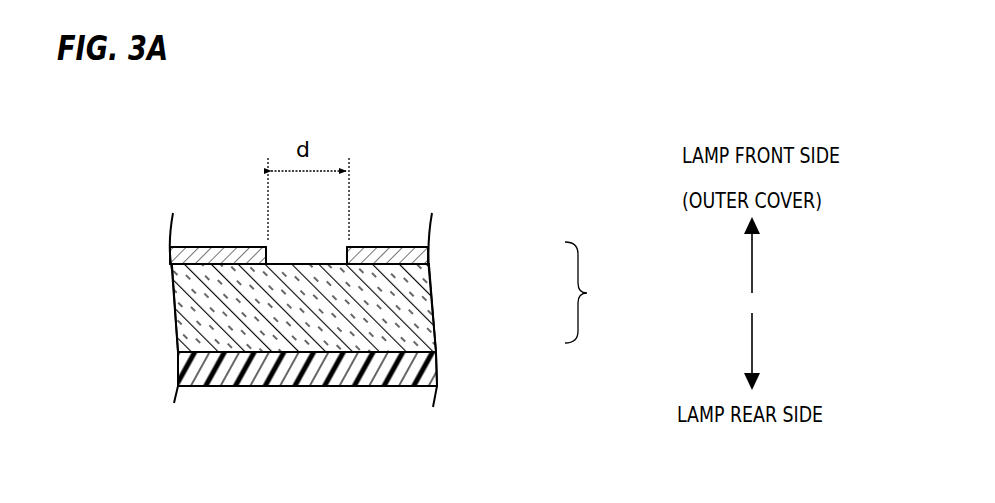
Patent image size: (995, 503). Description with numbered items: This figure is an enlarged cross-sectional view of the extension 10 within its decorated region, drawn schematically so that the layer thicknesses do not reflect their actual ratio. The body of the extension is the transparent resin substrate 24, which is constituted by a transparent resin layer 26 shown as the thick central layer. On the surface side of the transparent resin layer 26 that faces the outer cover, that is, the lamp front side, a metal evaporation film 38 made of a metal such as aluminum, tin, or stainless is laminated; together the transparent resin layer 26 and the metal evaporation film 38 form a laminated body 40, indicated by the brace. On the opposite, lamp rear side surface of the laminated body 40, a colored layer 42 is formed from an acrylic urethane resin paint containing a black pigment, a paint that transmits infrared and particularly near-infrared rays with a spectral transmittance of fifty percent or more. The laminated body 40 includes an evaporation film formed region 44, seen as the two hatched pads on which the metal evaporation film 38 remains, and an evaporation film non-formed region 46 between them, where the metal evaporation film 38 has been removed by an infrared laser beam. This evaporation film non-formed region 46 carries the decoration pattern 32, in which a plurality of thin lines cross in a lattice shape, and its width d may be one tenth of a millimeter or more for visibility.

The extension 10 is at (454, 186).
The transparent resin substrate 24 is at (433, 302).
The transparent resin layer 26 is at (360, 308).
The decoration pattern 32 is at (313, 260).
The metal evaporation film 38 is at (430, 250).
The laminated body 40 is at (599, 292).
The colored layer 42 is at (433, 372).
The evaporation film formed region 44 is at (229, 244).
The evaporation film non-formed region 46 is at (307, 234).